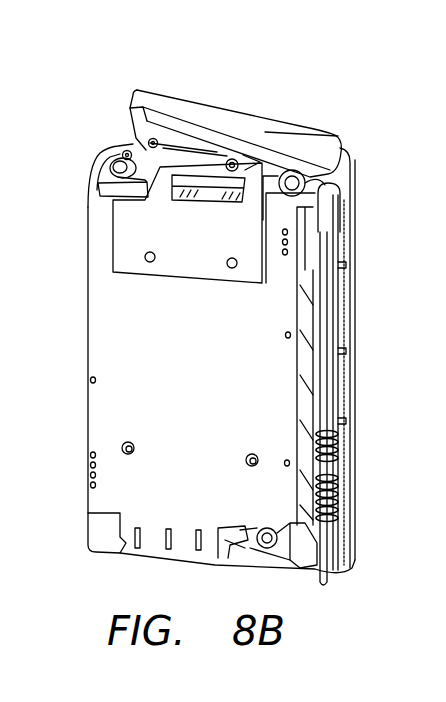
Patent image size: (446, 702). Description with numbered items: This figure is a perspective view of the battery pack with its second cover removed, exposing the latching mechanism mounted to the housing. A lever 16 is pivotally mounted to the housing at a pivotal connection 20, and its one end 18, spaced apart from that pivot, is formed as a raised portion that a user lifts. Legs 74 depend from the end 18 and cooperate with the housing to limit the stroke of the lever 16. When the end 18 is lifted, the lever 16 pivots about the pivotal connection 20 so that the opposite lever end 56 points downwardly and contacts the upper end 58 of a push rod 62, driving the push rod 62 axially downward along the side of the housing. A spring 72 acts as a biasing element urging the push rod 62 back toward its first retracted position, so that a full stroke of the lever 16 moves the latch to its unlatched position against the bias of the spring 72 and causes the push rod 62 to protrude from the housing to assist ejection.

The lever 16 is at (213, 119).
The end of the lever 18 is at (148, 94).
The pivotal connection 20 is at (246, 152).
The lever end 56 is at (323, 167).
The upper end of the push rod 58 is at (332, 212).
The push rod 62 is at (337, 333).
The spring 72 is at (337, 483).
The legs 74 is at (137, 128).